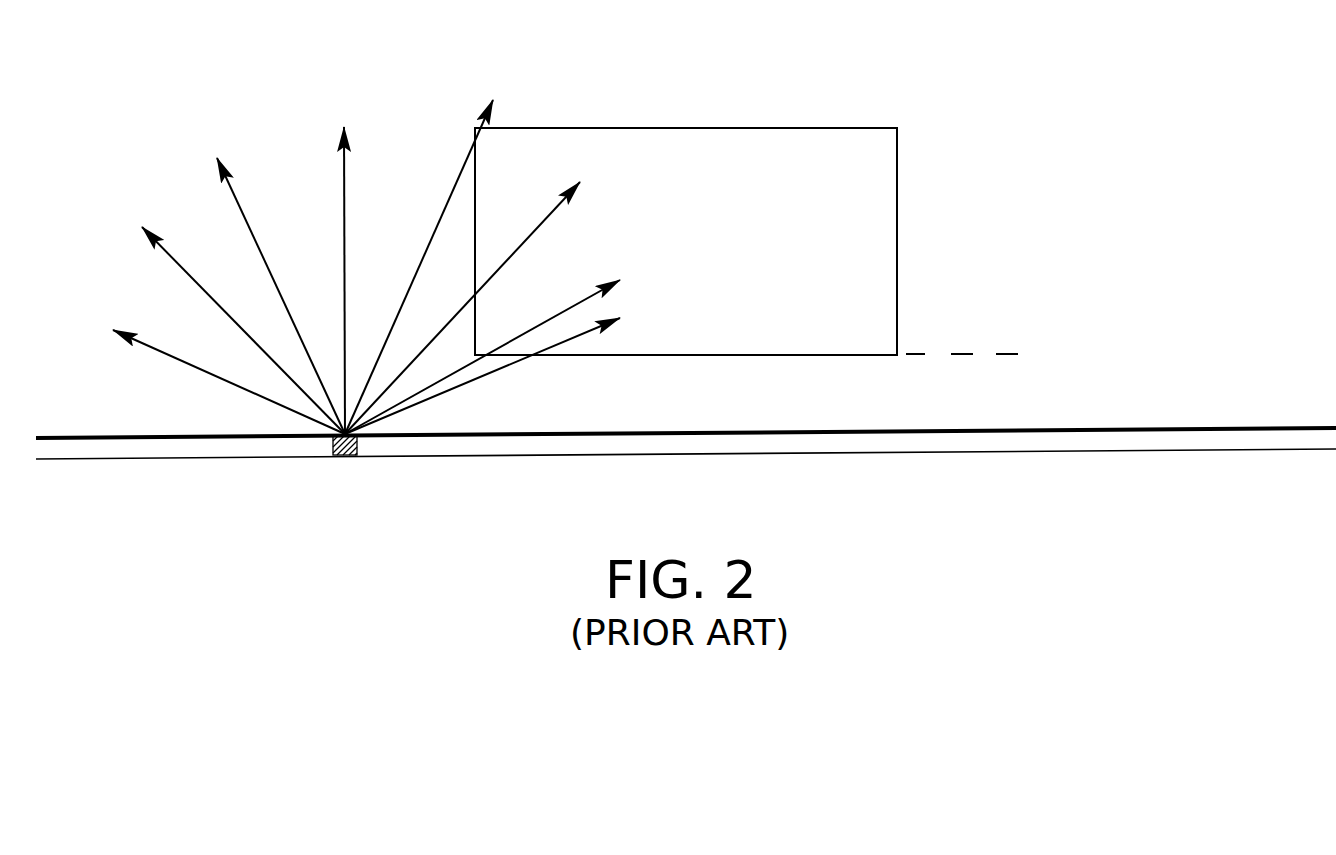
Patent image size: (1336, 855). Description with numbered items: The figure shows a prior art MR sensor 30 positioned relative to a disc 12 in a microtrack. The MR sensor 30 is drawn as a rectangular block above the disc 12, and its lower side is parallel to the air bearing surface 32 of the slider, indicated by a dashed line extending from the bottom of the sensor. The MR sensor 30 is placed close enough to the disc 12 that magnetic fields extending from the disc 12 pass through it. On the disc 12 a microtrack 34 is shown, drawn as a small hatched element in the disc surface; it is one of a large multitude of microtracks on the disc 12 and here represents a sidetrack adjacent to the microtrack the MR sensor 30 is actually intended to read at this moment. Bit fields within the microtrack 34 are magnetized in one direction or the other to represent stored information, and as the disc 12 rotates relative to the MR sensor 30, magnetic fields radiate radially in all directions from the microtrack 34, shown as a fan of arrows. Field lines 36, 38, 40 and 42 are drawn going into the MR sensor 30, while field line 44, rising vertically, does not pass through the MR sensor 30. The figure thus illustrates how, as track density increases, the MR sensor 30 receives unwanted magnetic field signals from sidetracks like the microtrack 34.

The disc 12 is at (1222, 450).
The MR sensor 30 is at (864, 128).
The air bearing surface 32 is at (983, 356).
The microtrack 34 is at (347, 455).
The field line 36 is at (502, 369).
The field line 38 is at (502, 347).
The field line 40 is at (479, 296).
The field line 42 is at (428, 248).
The field line 44 is at (345, 256).